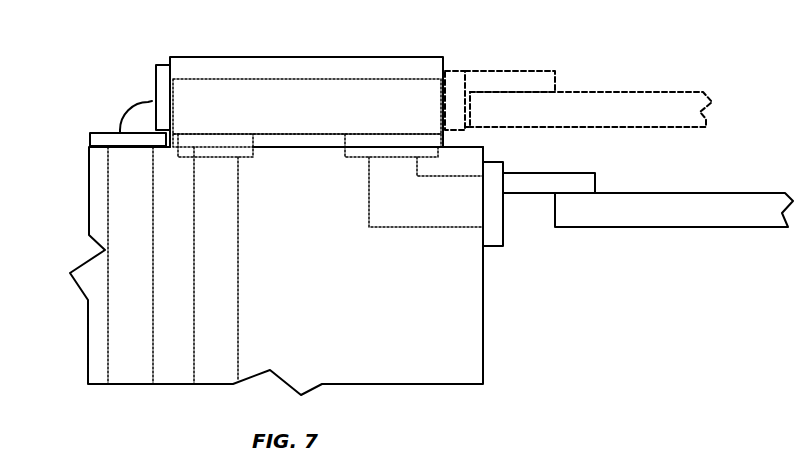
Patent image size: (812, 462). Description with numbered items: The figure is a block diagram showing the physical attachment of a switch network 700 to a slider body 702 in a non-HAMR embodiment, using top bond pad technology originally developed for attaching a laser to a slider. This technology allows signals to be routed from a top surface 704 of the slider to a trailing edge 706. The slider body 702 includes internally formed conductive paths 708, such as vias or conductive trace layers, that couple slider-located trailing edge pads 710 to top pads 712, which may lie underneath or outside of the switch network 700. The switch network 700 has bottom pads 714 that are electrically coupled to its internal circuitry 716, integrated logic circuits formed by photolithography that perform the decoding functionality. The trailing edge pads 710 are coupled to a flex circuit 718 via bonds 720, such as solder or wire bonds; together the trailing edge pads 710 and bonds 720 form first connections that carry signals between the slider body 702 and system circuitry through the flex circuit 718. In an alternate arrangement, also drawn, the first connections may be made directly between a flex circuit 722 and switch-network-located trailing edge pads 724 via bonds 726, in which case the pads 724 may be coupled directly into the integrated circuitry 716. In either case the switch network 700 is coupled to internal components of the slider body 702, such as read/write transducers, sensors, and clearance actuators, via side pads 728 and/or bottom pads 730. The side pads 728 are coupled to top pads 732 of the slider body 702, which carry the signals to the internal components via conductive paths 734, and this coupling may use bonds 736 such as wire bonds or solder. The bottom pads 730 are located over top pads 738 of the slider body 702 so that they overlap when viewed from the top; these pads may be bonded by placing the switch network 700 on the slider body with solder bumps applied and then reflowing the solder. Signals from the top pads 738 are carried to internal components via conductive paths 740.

The switch network 700 is at (345, 56).
The slider body 702 is at (385, 385).
The top surface 704 is at (468, 147).
The trailing edge 706 is at (484, 360).
The internally formed conductive paths 708 is at (415, 230).
The trailing edge pads 710 is at (497, 250).
The top pads 712 is at (350, 158).
The bottom pads 714 is at (428, 135).
The internal circuitry 716 is at (273, 78).
The flex circuit 718 is at (667, 230).
The bonds 720 is at (596, 177).
The flex circuit 722 is at (598, 116).
The switch-network-located trailing edge pads 724 is at (458, 70).
The bonds 726 is at (512, 71).
The side pads 728 is at (155, 72).
The bottom pads 730 is at (252, 140).
The top pads 732 is at (90, 135).
The conductive paths 734 is at (108, 195).
The bonds 736 is at (124, 104).
The top pads 738 is at (193, 160).
The conductive paths 740 is at (238, 270).